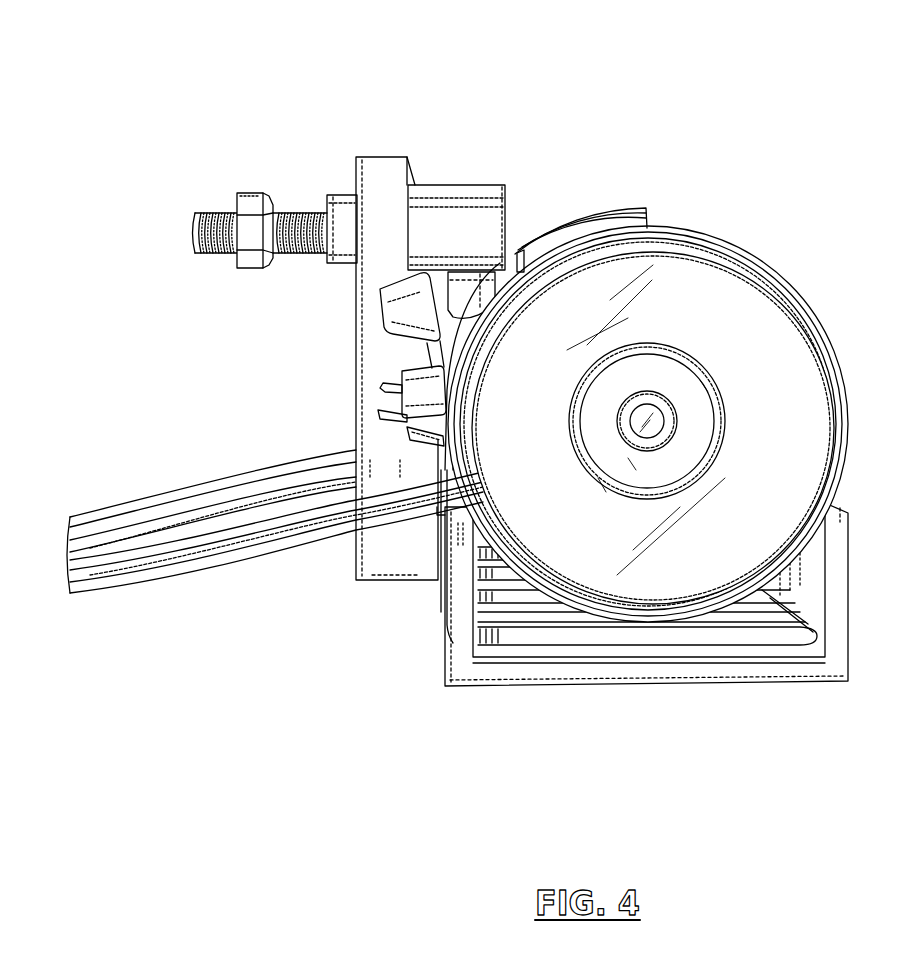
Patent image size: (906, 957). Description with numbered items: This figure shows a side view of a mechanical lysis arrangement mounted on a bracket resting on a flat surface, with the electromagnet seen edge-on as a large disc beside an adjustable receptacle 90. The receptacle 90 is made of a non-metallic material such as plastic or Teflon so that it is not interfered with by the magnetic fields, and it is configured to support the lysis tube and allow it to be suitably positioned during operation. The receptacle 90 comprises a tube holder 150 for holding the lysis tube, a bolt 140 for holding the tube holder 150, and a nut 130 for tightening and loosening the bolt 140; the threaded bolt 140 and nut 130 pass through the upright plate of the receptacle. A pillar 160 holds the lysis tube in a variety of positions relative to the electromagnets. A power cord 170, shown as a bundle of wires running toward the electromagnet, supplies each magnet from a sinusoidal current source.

The receptacle 90 is at (157, 22).
The nut 130 is at (250, 210).
The bolt 140 is at (304, 217).
The tube holder 150 is at (470, 212).
The pillar 160 is at (376, 345).
The power cord 170 is at (290, 537).